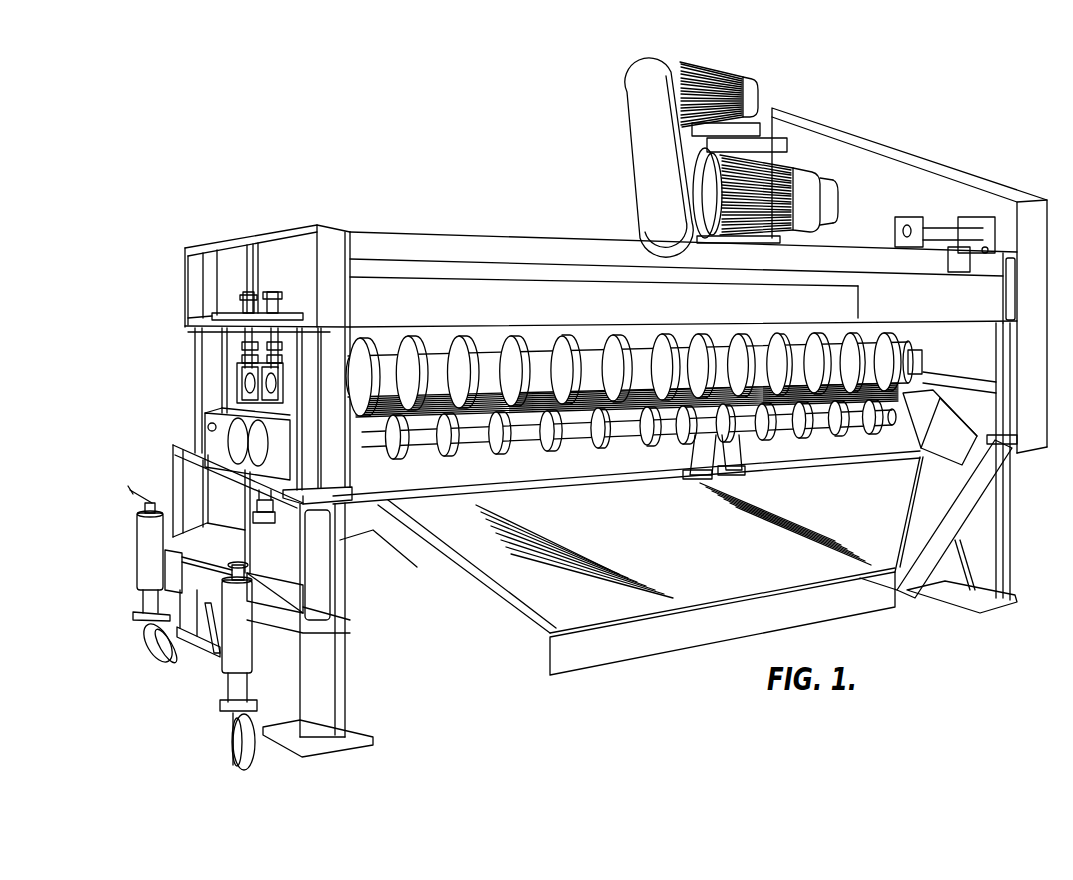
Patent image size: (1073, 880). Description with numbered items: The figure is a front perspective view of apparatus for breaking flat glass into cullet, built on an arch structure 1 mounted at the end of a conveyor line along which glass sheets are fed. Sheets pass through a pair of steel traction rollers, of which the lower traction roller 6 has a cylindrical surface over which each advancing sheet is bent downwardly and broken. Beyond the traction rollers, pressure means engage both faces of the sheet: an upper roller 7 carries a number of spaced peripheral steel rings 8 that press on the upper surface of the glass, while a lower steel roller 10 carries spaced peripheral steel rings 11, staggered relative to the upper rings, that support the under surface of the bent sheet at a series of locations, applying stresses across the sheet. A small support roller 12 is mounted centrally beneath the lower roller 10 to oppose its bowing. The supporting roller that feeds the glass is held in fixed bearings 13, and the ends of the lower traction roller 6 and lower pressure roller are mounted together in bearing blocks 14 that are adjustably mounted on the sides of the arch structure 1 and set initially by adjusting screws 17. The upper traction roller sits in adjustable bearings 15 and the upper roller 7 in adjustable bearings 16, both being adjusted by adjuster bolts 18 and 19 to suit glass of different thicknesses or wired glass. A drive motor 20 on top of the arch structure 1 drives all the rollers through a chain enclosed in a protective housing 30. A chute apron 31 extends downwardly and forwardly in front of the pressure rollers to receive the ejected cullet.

The arch structure 1 is at (428, 226).
The lower traction roller 6 is at (491, 400).
The upper roller 7 is at (686, 343).
The peripheral steel rings 8 is at (472, 336).
The lower steel roller 10 is at (573, 437).
The peripheral steel rings 11 is at (490, 458).
The support roller 12 is at (715, 442).
The fixed bearings 13 is at (208, 425).
The bearing blocks 14 is at (207, 413).
The adjustable bearings 15 is at (244, 383).
The adjustable bearings 16 is at (278, 387).
The adjusting screws 17 is at (268, 527).
The adjuster bolt 18 is at (242, 335).
The adjuster bolt 19 is at (283, 299).
The drive motor 20 is at (770, 183).
The protective housing 30 is at (967, 187).
The chute apron 31 is at (712, 587).